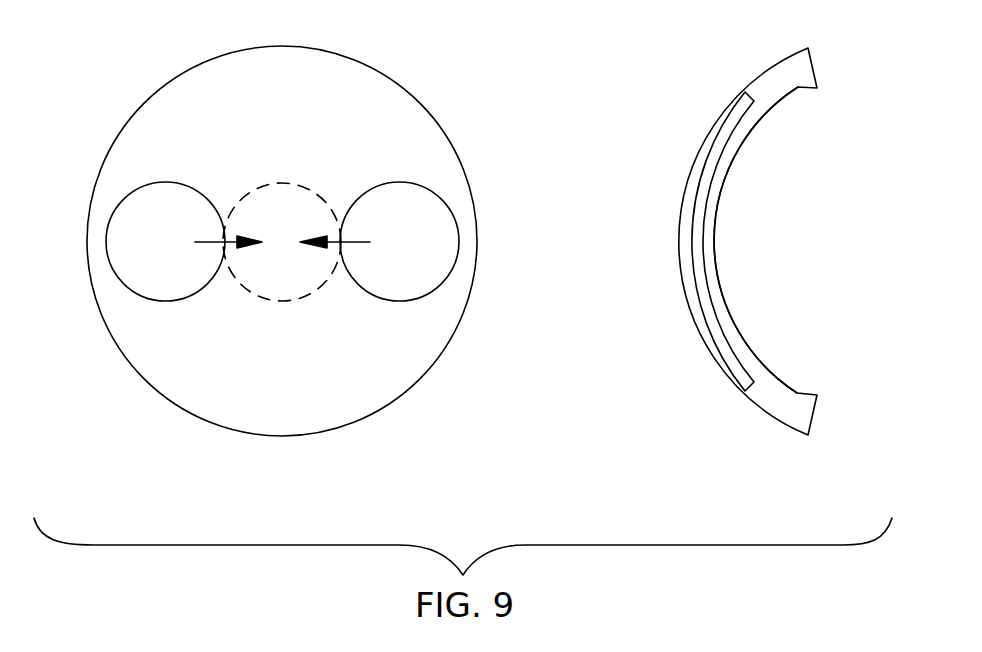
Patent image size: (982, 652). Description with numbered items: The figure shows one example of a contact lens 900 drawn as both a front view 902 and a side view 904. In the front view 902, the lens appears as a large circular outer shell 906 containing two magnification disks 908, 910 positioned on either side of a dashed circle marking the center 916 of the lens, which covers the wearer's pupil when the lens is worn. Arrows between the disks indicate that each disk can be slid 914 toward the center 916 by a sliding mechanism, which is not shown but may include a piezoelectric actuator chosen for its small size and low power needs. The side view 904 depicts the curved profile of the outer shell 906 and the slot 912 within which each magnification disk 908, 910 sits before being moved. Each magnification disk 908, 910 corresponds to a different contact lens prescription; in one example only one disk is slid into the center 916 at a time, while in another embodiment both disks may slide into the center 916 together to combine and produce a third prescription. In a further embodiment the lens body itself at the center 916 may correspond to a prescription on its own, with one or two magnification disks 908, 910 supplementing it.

The contact lens 900 is at (167, 59).
The front view 902 is at (462, 138).
The side view 904 is at (712, 75).
The outer shell 906 is at (788, 80).
The magnification disk 908 is at (137, 206).
The magnification disk 910 is at (427, 203).
The slot 912 is at (697, 193).
The sliding 914 is at (357, 243).
The center 916 is at (290, 192).